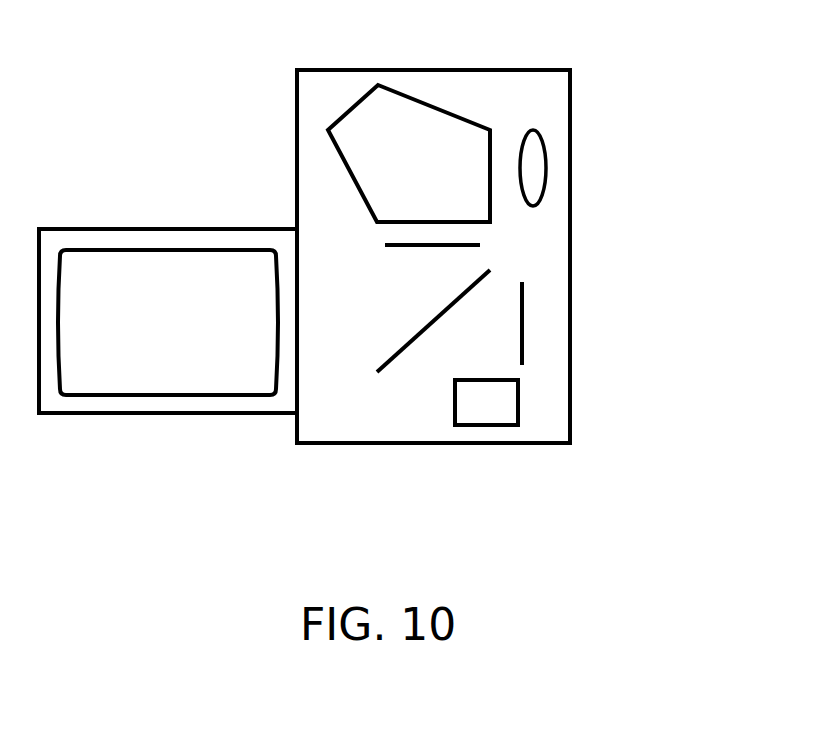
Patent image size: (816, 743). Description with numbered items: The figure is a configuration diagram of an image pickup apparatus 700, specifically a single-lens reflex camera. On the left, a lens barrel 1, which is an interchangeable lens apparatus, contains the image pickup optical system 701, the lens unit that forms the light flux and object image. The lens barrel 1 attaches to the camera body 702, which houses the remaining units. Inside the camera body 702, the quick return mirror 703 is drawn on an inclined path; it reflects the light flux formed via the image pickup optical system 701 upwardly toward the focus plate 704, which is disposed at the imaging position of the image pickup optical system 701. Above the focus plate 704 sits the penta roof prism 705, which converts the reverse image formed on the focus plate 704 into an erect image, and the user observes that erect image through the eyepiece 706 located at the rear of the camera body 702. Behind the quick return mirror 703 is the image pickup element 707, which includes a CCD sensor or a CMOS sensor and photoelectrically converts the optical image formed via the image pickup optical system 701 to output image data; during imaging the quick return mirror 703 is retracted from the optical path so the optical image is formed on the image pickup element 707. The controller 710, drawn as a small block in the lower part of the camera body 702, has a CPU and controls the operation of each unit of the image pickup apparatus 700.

The image pickup apparatus 700 is at (651, 33).
The lens barrel 1 is at (213, 227).
The image pickup optical system 701 is at (130, 250).
The camera body 702 is at (571, 421).
The quick return mirror 703 is at (408, 350).
The focus plate 704 is at (418, 247).
The penta roof prism 705 is at (353, 116).
The eyepiece 706 is at (543, 178).
The image pickup element 707 is at (523, 320).
The controller 710 is at (497, 425).